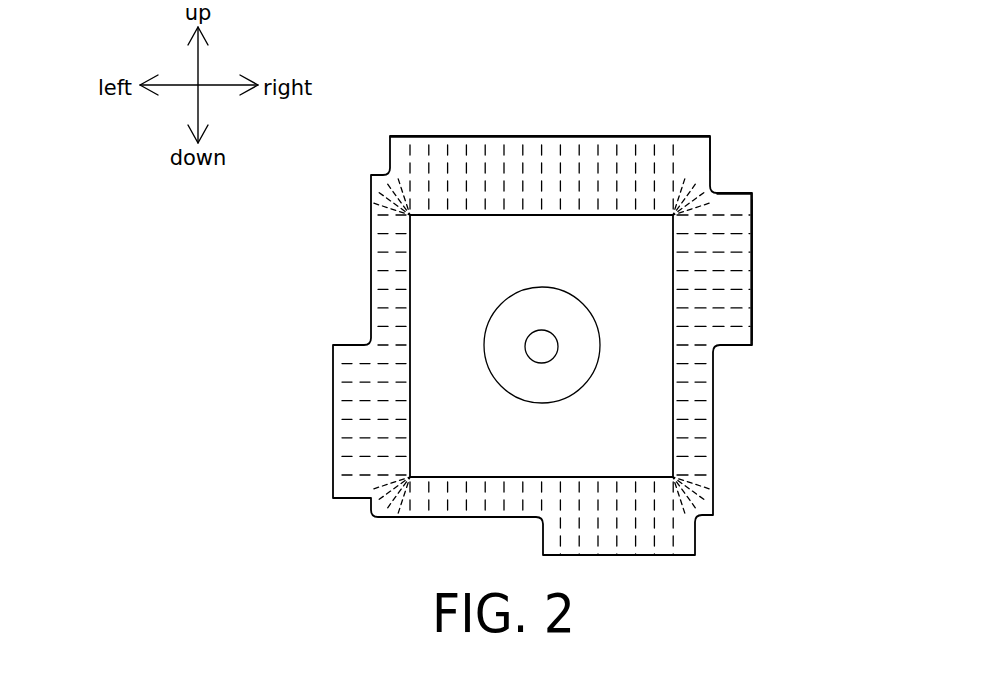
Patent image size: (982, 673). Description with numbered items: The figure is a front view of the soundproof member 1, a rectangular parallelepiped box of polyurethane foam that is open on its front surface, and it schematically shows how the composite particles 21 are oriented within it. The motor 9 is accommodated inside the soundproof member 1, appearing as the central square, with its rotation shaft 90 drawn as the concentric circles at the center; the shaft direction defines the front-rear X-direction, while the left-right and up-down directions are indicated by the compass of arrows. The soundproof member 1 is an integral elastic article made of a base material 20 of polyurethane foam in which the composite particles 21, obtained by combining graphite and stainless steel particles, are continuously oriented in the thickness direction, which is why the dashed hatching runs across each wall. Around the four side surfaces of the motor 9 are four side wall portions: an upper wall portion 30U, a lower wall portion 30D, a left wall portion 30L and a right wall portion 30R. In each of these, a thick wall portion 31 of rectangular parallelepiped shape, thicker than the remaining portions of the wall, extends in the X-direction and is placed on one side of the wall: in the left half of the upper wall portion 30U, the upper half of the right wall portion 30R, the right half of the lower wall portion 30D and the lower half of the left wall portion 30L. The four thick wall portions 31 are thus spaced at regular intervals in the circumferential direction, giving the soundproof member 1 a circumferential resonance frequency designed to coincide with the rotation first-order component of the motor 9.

The soundproof member 1 is at (660, 178).
The motor 9 is at (440, 260).
The rotation shaft 90 is at (538, 341).
The base material 20 is at (740, 222).
The composite particles 21 is at (737, 307).
The upper wall portion 30U is at (587, 185).
The lower wall portion 30D is at (497, 503).
The left wall portion 30L is at (387, 242).
The right wall portion 30R is at (703, 393).
The thick wall portion 31 is at (455, 148).